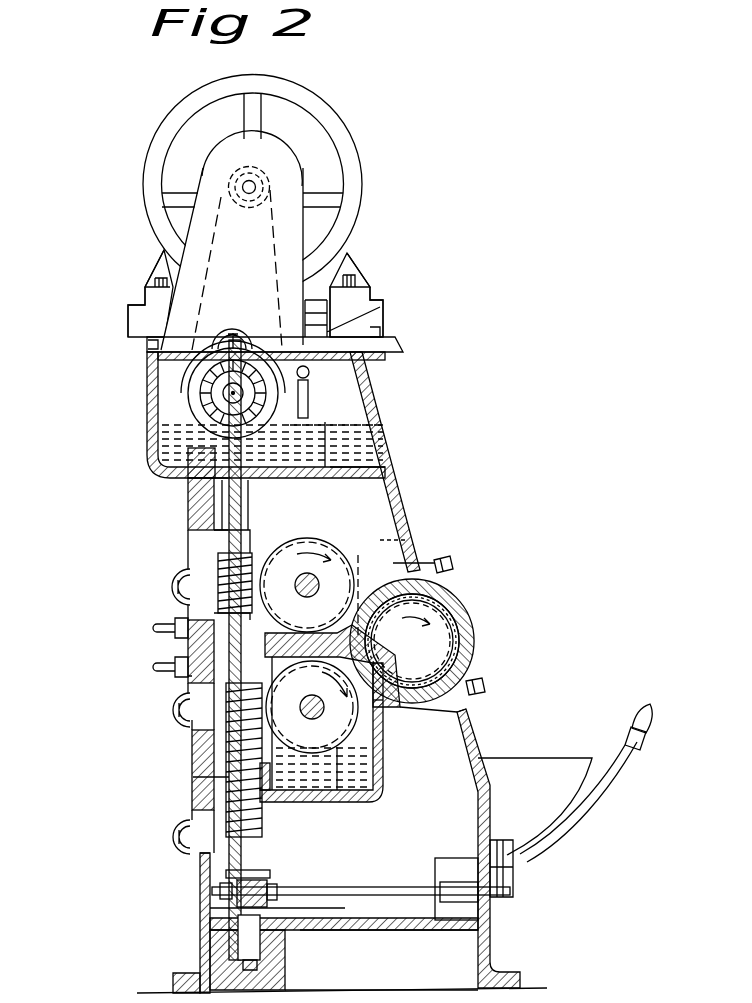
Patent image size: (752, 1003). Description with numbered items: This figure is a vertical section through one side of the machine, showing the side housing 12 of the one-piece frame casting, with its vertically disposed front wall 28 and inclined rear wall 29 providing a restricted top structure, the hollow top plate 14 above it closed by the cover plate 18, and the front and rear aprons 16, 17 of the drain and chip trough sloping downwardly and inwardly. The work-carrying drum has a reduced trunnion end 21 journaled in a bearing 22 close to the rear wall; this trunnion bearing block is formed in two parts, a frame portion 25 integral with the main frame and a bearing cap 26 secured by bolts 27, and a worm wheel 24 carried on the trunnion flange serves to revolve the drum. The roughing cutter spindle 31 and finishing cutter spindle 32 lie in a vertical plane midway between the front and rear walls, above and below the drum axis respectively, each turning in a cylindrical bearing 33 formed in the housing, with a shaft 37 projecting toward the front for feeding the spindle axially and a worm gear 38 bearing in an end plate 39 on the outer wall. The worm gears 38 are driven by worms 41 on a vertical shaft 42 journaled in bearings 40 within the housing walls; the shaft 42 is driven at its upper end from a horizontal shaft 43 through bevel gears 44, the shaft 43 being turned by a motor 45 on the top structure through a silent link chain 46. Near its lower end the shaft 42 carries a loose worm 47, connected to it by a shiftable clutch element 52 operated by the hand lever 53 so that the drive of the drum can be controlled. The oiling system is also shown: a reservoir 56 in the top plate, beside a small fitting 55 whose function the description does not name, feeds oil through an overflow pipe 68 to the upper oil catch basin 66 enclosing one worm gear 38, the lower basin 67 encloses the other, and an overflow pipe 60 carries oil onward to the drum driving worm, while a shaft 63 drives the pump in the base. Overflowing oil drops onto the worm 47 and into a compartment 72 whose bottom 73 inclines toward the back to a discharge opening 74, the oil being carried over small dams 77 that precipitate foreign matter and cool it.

The side housing 12 is at (472, 733).
The top plate 14 is at (157, 438).
The front apron 16 is at (150, 860).
The rear apron 17 is at (550, 763).
The cover plate 18 is at (400, 348).
The trunnion end 21 is at (450, 611).
The bearing 22 is at (468, 633).
The worm wheel 24 is at (492, 948).
The frame portion 25 is at (361, 598).
The bearing cap 26 is at (451, 591).
The bolts 27 is at (445, 563).
The front wall 28 is at (188, 533).
The rear wall 29 is at (400, 502).
The roughing cutter spindle 31 is at (304, 580).
The finishing cutter spindle 32 is at (314, 700).
The cylindrical bearing 33 is at (248, 333).
The shaft 37 is at (153, 665).
The worm gear 38 is at (302, 533).
The end plate 39 is at (178, 587).
The bearings 40 is at (213, 475).
The worm 41 is at (213, 570).
The vertical shaft 42 is at (237, 492).
The horizontal shaft 43 is at (160, 388).
The bevel gears 44 is at (170, 413).
The motor 45 is at (359, 152).
The silent link chain 46 is at (273, 228).
The loose worm 47 is at (267, 827).
The shiftable clutch element 52 is at (272, 877).
The hand lever 53 is at (587, 815).
The oil cup 55 is at (312, 402).
The reservoir 56 is at (350, 447).
The overflow pipe 60 is at (363, 802).
The shaft 63 is at (372, 640).
The oil catch basin 66 is at (385, 532).
The oil catch basin 67 is at (373, 765).
The overflow pipe 68 is at (392, 470).
The compartment 72 is at (330, 887).
The inclined bottom 73 is at (368, 933).
The discharge opening 74 is at (435, 904).
The small dams 77 is at (388, 918).